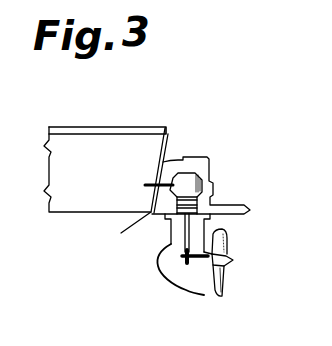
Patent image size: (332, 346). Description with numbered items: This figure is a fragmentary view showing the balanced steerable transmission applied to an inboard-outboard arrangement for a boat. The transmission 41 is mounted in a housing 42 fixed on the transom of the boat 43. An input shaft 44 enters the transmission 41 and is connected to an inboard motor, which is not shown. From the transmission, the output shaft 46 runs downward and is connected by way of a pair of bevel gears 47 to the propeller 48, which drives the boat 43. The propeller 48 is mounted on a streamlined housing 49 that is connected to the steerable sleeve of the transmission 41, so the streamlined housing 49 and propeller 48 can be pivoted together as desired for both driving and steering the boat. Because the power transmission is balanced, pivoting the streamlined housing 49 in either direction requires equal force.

The transmission 41 is at (202, 185).
The housing 42 is at (199, 160).
The boat 43 is at (103, 128).
The input shaft 44 is at (146, 185).
The output shaft 46 is at (183, 227).
The bevel gears 47 is at (193, 272).
The propeller 48 is at (228, 248).
The streamlined housing 49 is at (195, 297).